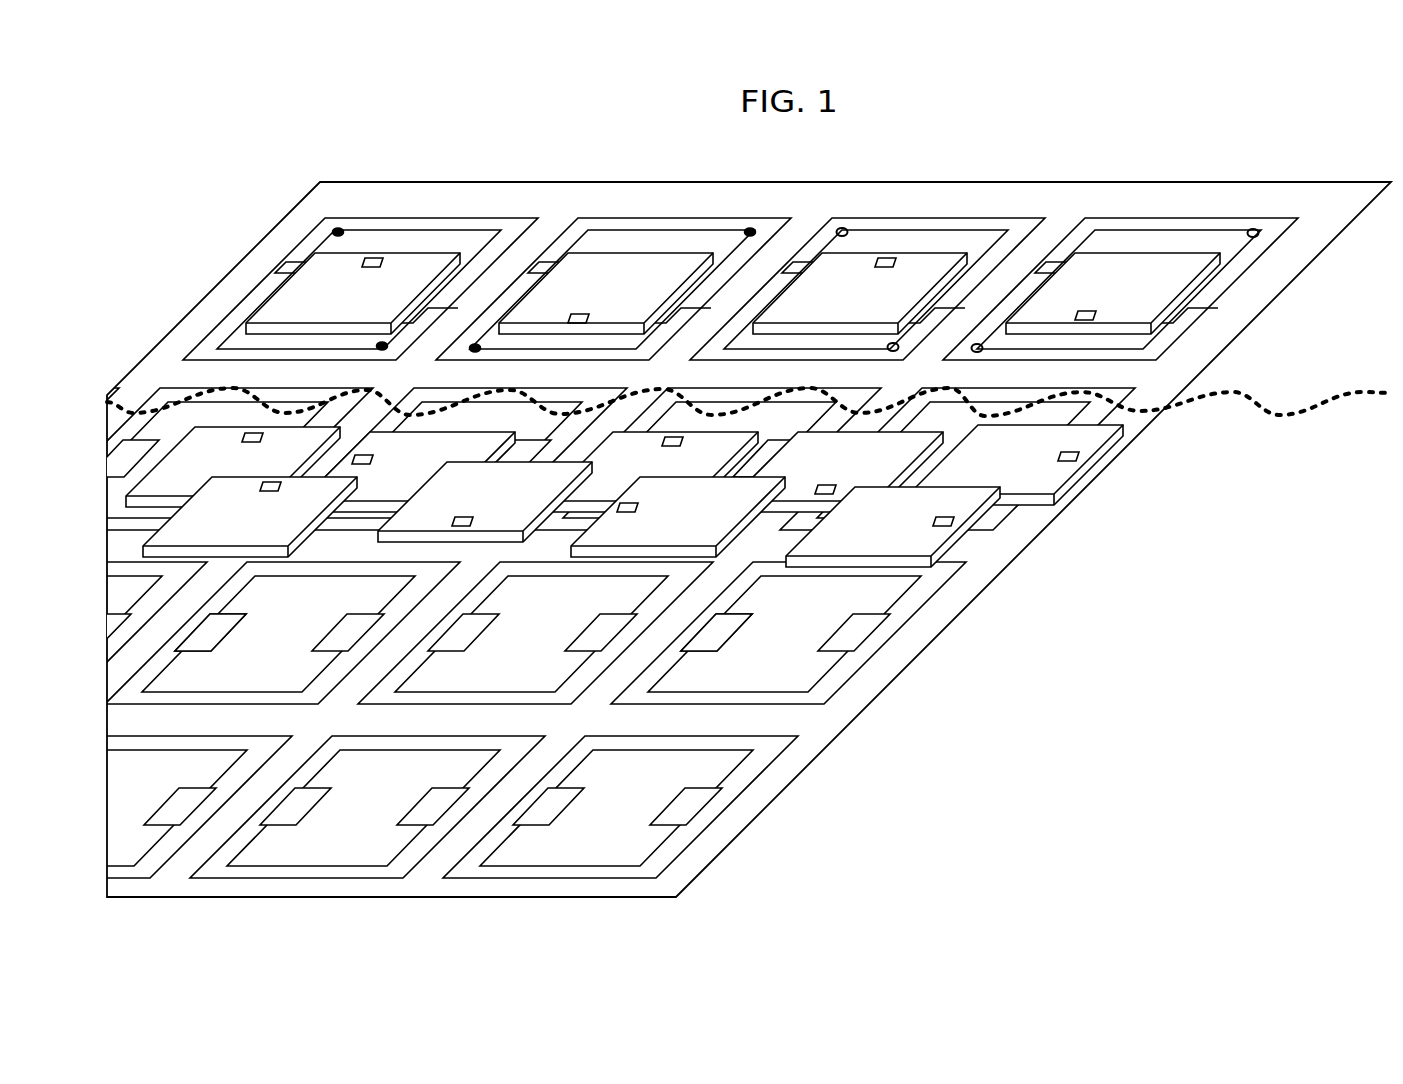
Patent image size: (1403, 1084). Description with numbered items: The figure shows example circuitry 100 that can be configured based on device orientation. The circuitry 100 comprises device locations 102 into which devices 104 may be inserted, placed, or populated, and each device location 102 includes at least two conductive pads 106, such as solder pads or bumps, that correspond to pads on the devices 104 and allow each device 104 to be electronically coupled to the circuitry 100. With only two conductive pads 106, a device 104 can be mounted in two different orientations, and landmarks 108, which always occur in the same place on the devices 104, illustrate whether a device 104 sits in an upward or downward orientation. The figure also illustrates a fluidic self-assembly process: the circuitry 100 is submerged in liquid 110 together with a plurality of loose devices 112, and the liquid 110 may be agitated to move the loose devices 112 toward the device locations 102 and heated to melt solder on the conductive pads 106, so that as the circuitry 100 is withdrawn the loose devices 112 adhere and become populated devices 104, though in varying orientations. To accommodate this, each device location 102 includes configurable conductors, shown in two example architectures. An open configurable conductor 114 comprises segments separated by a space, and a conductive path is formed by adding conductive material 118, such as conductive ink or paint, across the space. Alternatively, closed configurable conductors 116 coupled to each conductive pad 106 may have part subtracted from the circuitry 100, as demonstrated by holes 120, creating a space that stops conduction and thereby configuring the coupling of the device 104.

The circuitry 100 is at (320, 185).
The device locations 102 is at (313, 222).
The devices 104 is at (307, 267).
The conductive pads 106 is at (257, 303).
The landmarks 108 is at (383, 258).
The liquid 110 is at (1253, 402).
The loose devices 112 is at (1070, 497).
The open configurable conductor 114 is at (175, 650).
The closed configurable conductors 116 is at (692, 652).
The conductive material 118 is at (340, 232).
The holes 120 is at (1260, 231).